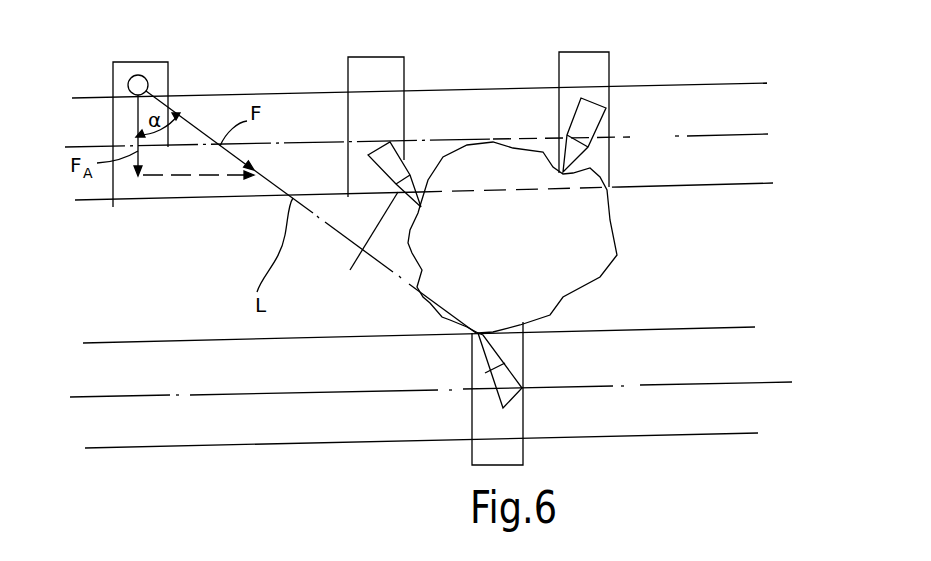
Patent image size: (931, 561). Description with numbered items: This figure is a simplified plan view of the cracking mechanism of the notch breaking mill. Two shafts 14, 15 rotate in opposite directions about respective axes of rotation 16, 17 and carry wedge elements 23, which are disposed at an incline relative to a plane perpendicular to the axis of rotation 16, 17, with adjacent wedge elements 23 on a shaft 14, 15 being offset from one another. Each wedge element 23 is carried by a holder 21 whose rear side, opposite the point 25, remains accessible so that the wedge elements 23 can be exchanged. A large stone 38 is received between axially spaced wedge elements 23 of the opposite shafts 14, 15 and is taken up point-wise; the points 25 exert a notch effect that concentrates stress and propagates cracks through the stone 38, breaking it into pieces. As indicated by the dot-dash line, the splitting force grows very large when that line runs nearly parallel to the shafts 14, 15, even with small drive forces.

The shaft 14 is at (730, 177).
The axis of rotation 16 is at (737, 133).
The shaft 15 is at (705, 367).
The axis of rotation 17 is at (759, 381).
The holder 21 is at (378, 160).
The wedge element 23 is at (143, 76).
The point 25 is at (423, 207).
The stone 38 is at (617, 255).